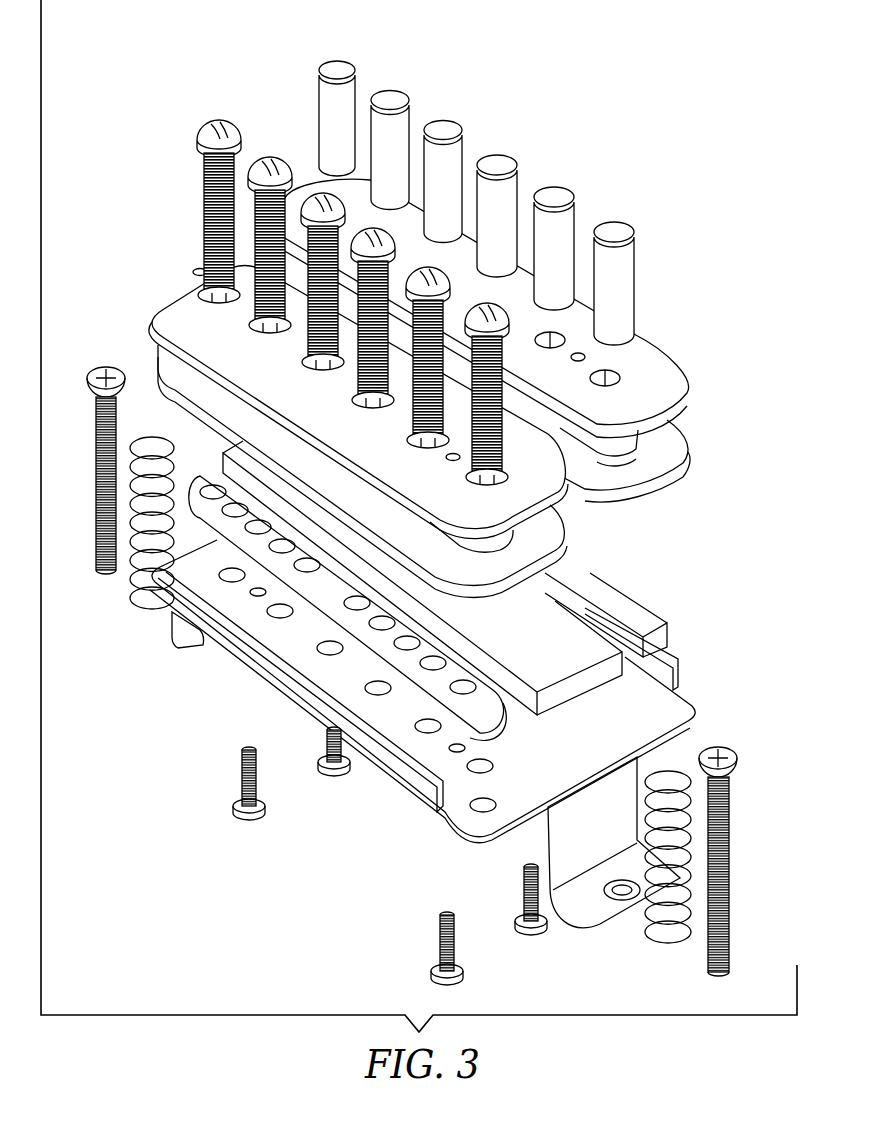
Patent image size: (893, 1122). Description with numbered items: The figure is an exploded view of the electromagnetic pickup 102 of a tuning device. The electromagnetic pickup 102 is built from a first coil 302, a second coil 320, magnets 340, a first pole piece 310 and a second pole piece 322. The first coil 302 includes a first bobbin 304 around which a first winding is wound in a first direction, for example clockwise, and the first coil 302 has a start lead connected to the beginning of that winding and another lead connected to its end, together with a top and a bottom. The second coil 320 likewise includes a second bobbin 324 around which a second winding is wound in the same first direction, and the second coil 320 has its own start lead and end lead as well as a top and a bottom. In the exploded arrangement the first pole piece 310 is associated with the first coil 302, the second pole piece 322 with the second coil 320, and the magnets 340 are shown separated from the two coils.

The electromagnetic pickup 102 is at (178, 56).
The first coil 302 is at (158, 264).
The first bobbin 304 is at (167, 340).
The first pole piece 310 is at (274, 157).
The second coil 320 is at (710, 382).
The second pole piece 322 is at (568, 192).
The second bobbin 324 is at (686, 458).
The magnets 340 is at (573, 663).